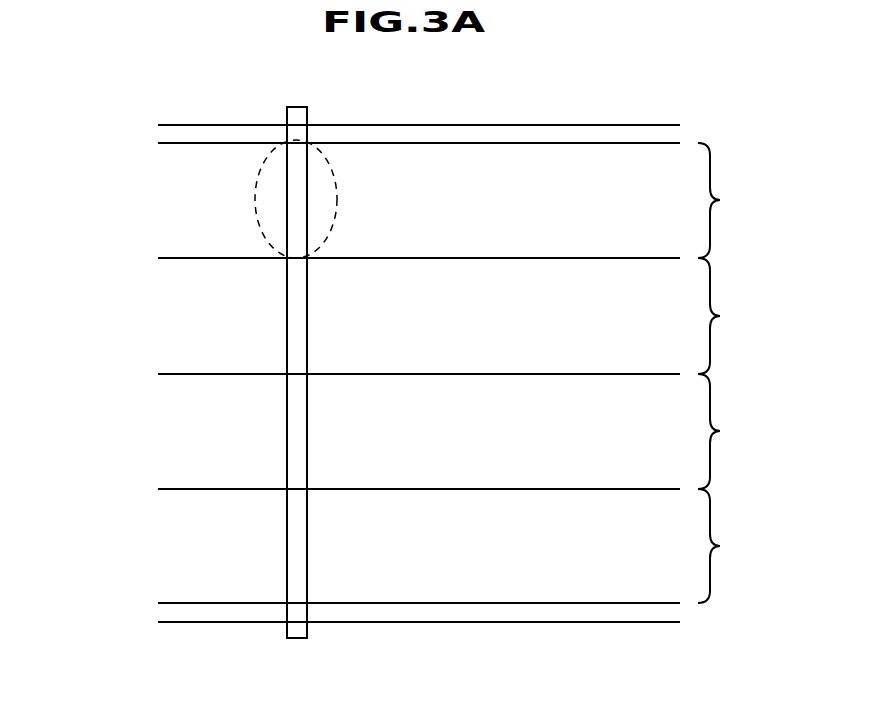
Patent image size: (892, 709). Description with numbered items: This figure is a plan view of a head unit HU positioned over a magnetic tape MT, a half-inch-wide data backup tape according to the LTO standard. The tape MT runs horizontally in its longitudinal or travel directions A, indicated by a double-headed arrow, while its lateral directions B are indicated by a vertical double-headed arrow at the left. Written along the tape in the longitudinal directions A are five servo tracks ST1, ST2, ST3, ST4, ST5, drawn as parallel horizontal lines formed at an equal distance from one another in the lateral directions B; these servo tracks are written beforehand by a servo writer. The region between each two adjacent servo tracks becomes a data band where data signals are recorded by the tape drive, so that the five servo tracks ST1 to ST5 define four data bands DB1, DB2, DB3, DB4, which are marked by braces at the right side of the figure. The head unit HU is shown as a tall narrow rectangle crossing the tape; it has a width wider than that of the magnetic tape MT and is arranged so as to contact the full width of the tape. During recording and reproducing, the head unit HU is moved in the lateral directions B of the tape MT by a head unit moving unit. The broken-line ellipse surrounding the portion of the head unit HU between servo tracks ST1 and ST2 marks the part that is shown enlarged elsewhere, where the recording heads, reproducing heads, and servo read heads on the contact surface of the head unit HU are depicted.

The magnetic tape MT is at (523, 111).
The head unit HU is at (307, 118).
The servo track ST1 is at (385, 149).
The servo track ST2 is at (385, 264).
The servo track ST3 is at (385, 380).
The servo track ST4 is at (385, 495).
The servo track ST5 is at (385, 609).
The data band DB1 is at (737, 200).
The data band DB2 is at (737, 316).
The data band DB3 is at (737, 431).
The data band DB4 is at (737, 546).
The longitudinal directions A is at (295, 91).
The lateral directions B is at (53, 245).